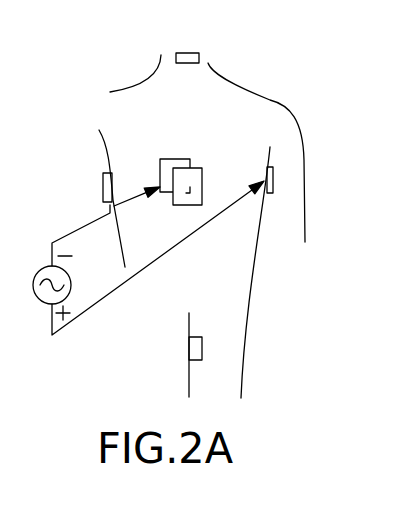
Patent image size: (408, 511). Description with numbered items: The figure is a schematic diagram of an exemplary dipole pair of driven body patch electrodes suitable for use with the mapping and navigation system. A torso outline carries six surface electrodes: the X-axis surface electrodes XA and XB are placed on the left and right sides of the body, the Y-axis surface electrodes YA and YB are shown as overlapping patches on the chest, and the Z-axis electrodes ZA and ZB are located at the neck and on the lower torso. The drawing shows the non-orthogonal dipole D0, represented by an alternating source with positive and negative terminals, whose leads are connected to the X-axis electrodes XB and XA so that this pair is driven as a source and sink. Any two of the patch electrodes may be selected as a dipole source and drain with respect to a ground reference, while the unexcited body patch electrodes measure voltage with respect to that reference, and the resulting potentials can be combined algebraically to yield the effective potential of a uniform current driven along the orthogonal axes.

The Z-axis surface electrode ZA is at (202, 46).
The X-axis surface electrode XB is at (93, 184).
The Y-axis surface electrode YA is at (170, 161).
The Y-axis surface electrode YB is at (201, 187).
The X-axis surface electrode XA is at (283, 178).
The dipole D0 is at (145, 258).
The Z-axis surface electrode ZB is at (211, 355).